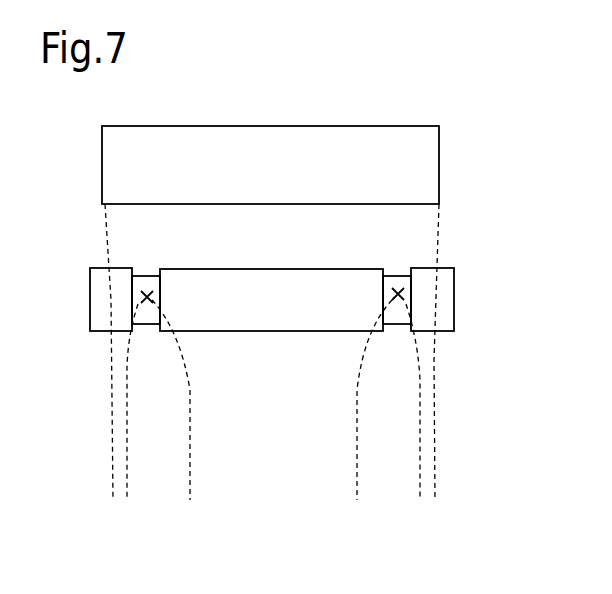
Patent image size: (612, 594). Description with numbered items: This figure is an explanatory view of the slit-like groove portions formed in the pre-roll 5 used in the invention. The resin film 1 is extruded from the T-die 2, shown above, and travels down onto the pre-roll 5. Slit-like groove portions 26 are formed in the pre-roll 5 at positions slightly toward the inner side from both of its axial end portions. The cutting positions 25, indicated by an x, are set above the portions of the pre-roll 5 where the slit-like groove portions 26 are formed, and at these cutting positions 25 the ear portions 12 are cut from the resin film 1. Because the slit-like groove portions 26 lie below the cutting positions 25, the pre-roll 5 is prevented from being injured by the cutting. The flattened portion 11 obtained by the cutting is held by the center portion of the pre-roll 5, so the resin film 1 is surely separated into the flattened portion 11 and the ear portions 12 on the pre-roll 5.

The resin film 1 is at (120, 227).
The T-die 2 is at (425, 162).
The pre-roll 5 is at (446, 290).
The flattened portion 11 is at (357, 500).
The ear portions 12 is at (127, 500).
The cutting positions 25 is at (140, 297).
The slit-like groove portions 26 is at (146, 276).